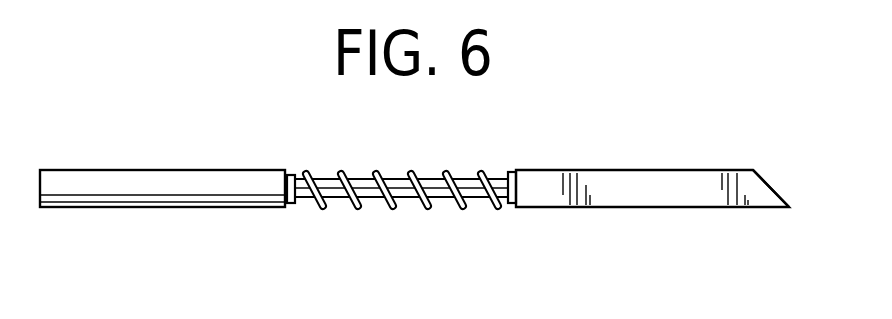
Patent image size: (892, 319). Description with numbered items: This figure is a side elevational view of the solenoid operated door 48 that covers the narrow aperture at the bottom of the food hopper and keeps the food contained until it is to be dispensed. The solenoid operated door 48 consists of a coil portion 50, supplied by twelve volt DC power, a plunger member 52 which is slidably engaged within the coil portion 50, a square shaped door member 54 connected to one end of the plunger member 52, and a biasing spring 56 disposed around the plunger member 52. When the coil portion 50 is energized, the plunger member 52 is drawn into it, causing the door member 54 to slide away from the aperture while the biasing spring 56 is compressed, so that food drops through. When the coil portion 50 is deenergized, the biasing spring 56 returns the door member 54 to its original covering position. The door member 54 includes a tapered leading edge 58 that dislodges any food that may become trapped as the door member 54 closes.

The solenoid operated door 48 is at (250, 292).
The coil portion 50 is at (160, 187).
The plunger member 52 is at (407, 191).
The door member 54 is at (606, 190).
The biasing spring 56 is at (446, 168).
The tapered leading edge 58 is at (772, 185).